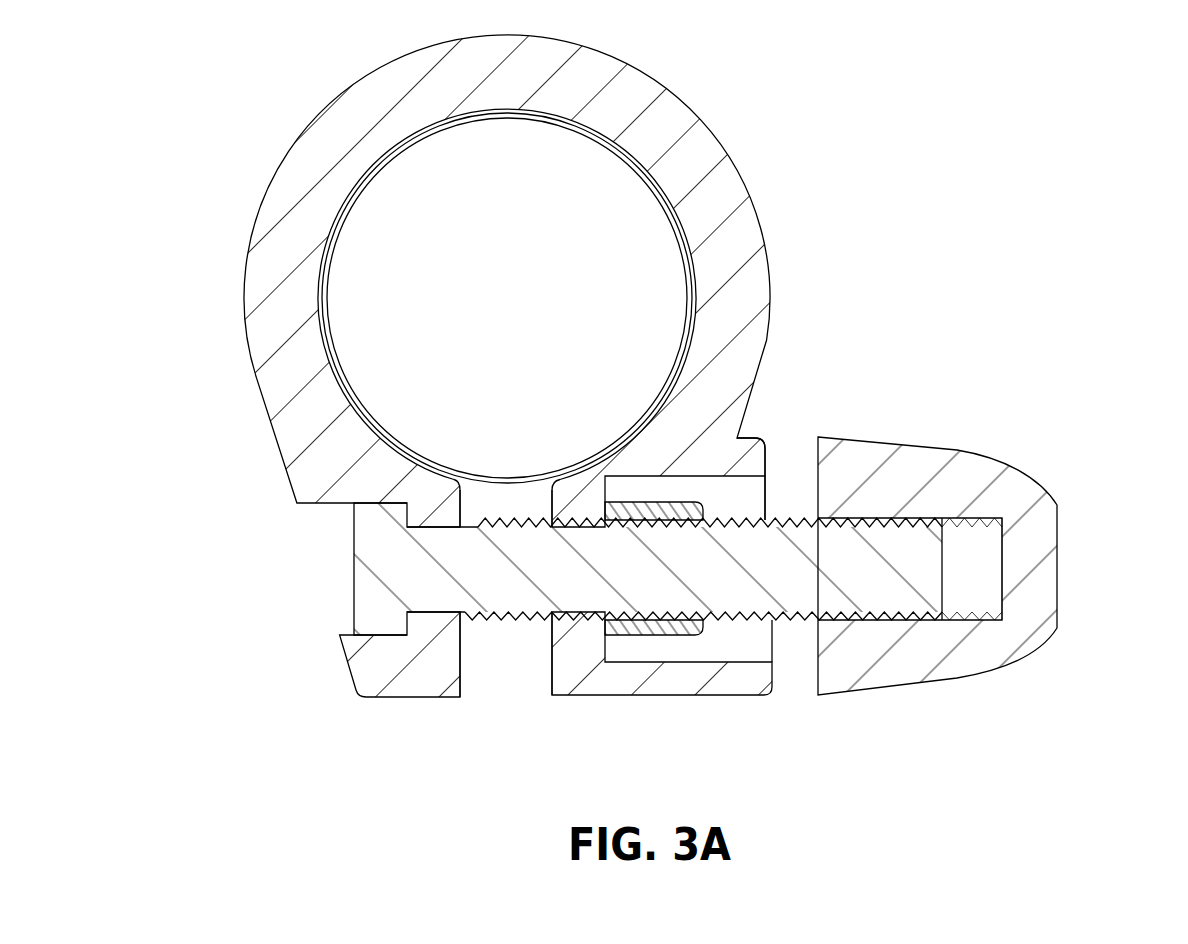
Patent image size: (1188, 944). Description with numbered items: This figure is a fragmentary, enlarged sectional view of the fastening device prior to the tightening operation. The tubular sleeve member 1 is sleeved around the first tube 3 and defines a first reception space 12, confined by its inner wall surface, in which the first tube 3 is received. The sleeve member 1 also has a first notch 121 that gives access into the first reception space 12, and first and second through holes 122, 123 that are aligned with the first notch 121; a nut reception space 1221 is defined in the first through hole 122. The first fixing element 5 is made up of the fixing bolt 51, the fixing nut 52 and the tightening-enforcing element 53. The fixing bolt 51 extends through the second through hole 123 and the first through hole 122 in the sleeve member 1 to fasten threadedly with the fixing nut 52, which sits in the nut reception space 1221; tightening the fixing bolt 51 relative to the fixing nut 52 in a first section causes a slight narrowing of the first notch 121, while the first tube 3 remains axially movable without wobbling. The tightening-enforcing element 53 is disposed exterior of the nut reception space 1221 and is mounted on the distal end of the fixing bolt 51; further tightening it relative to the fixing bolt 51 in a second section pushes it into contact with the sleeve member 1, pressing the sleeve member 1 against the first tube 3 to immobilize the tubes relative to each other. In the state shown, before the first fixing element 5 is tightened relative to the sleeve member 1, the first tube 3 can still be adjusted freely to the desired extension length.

The tubular sleeve member 1 is at (564, 419).
The first reception space 12 is at (687, 230).
The first tube 3 is at (690, 295).
The nut reception space 1221 is at (728, 500).
The first fixing element 5 is at (693, 610).
The fixing bolt 51 is at (382, 553).
The fixing nut 52 is at (653, 623).
The tightening-enforcing element 53 is at (945, 658).
The first notch 121 is at (553, 688).
The first through hole 122 is at (550, 613).
The second through hole 123 is at (460, 613).